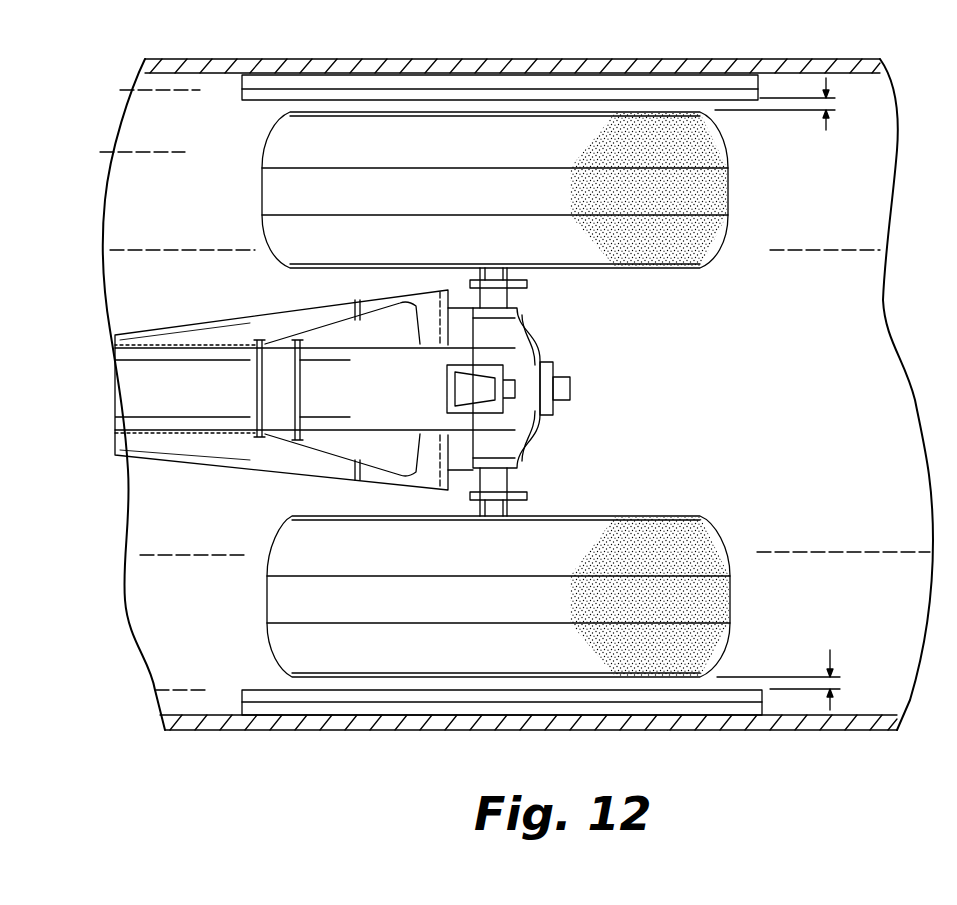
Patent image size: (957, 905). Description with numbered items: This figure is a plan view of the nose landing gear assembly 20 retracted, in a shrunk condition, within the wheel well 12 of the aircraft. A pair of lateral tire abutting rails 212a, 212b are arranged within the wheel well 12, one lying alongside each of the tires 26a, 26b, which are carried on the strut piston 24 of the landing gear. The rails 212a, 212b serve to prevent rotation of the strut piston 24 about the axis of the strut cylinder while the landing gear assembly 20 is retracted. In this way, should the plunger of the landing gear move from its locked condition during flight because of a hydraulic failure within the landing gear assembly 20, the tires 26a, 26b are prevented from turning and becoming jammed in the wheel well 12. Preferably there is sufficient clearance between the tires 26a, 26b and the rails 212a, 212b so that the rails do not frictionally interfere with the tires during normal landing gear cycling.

The wheel well 12 is at (813, 413).
The nose landing gear assembly 20 is at (268, 458).
The strut piston 24 is at (148, 403).
The tire 26a is at (708, 245).
The tire 26b is at (704, 540).
The lateral tire abutting rail 212a is at (716, 83).
The lateral tire abutting rail 212b is at (695, 697).